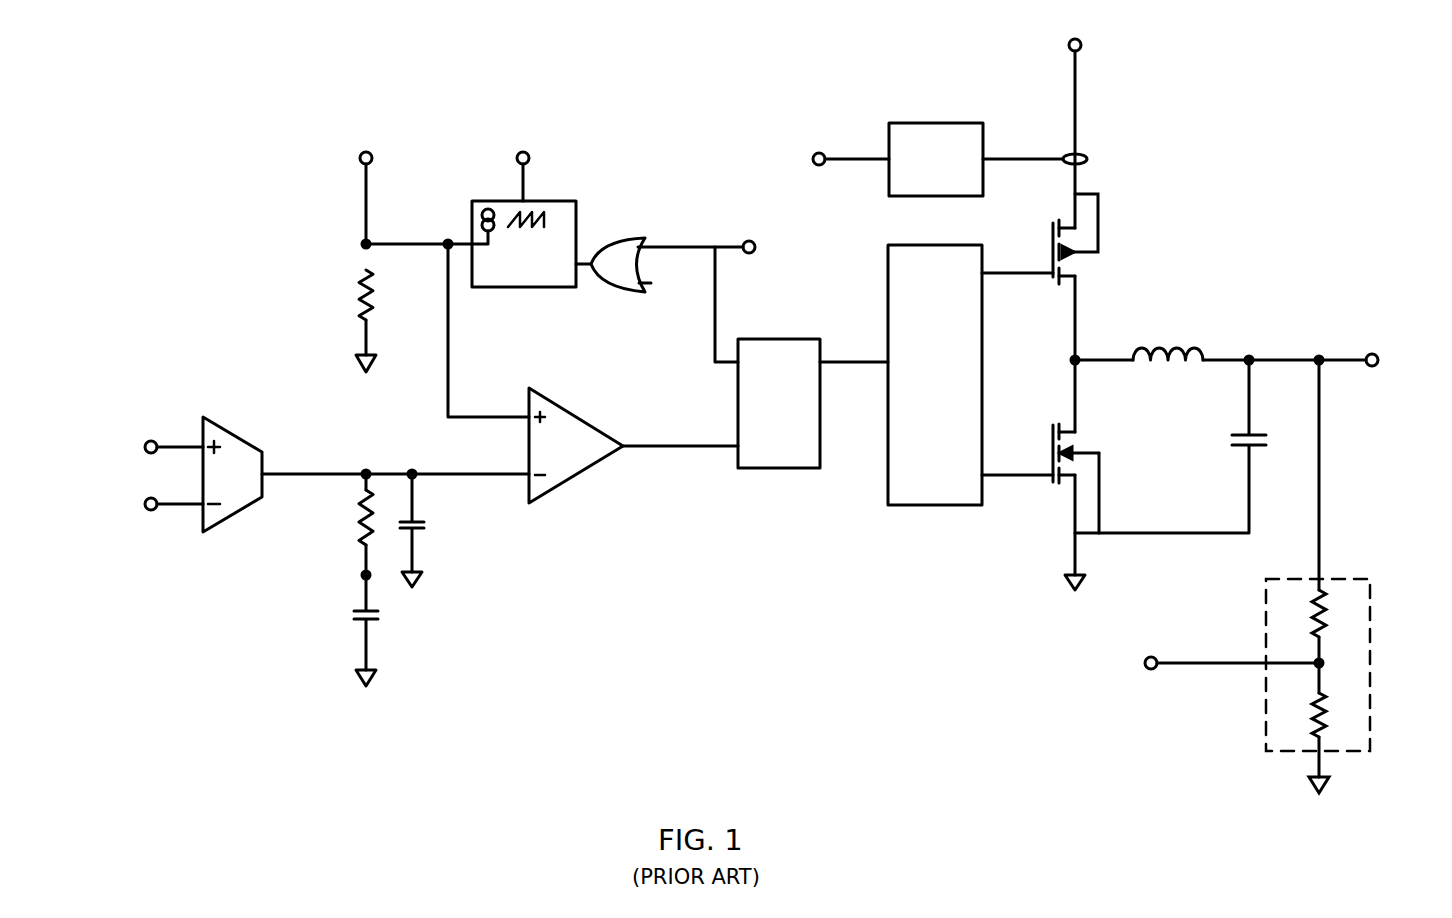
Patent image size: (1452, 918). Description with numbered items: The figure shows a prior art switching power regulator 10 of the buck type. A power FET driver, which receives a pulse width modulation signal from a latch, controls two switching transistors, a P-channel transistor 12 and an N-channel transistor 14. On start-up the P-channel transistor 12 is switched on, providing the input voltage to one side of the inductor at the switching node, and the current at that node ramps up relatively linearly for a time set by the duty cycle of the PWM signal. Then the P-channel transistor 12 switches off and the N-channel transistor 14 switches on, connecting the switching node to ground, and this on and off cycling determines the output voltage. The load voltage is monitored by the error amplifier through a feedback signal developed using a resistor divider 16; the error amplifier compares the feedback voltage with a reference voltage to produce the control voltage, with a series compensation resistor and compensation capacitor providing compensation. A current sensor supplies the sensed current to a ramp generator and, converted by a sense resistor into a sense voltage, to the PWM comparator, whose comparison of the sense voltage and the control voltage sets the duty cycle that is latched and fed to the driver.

The switching power regulator 10 is at (765, 416).
The P-channel transistor 12 is at (1043, 245).
The N-channel transistor 14 is at (1046, 453).
The resistor divider 16 is at (1265, 637).